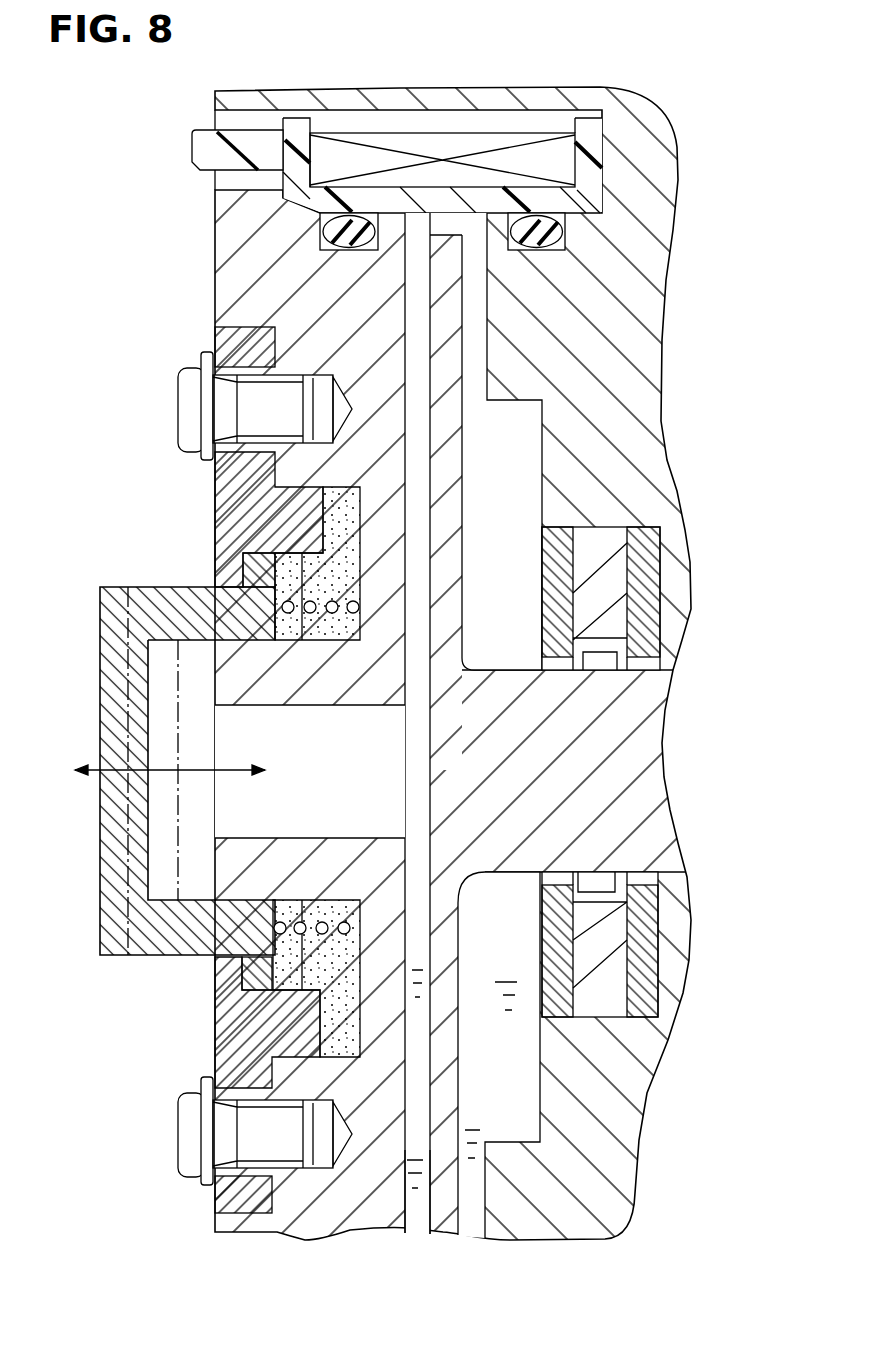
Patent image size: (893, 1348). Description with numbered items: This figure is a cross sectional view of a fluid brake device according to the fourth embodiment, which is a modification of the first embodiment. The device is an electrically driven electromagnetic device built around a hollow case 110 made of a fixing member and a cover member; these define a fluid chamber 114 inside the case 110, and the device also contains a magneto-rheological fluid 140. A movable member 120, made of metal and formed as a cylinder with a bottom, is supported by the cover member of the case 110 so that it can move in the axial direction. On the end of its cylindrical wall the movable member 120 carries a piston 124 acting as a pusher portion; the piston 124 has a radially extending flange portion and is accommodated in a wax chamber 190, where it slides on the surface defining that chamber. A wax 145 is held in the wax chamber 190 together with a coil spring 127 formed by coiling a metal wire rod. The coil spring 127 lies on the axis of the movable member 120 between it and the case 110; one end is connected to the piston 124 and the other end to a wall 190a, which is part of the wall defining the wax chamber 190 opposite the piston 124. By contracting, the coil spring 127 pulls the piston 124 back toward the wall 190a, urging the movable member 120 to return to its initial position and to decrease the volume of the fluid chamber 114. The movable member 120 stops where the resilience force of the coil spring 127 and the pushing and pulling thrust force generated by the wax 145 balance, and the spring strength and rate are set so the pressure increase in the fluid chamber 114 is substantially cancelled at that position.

The case 110 is at (240, 262).
The fluid chamber 114 is at (442, 218).
The movable member 120 is at (98, 687).
The piston 124 is at (213, 613).
The coil spring 127 is at (287, 600).
The magneto-rheological fluid 140 is at (410, 1203).
The wax 145 is at (347, 517).
The wax chamber 190 is at (327, 950).
The wall 190a is at (300, 550).